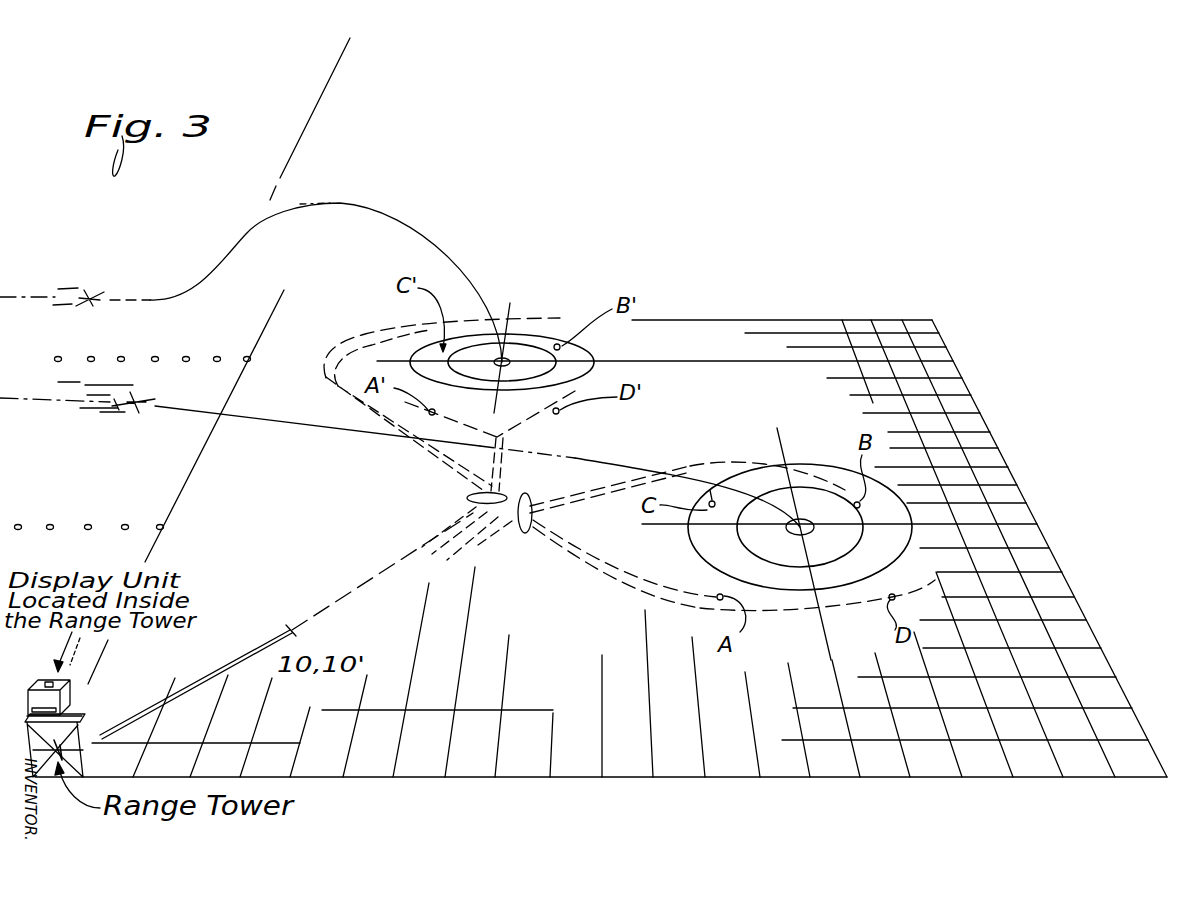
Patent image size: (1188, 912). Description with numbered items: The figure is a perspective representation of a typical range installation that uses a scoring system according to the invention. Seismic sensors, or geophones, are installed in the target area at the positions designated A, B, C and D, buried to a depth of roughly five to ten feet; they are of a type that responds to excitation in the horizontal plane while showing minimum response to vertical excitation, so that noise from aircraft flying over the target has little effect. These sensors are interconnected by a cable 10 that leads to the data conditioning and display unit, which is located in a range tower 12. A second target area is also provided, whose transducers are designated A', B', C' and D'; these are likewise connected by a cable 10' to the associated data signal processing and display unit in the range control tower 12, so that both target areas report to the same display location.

The cable 10 is at (529, 540).
The cable 10' is at (450, 502).
The range tower 12 is at (78, 684).